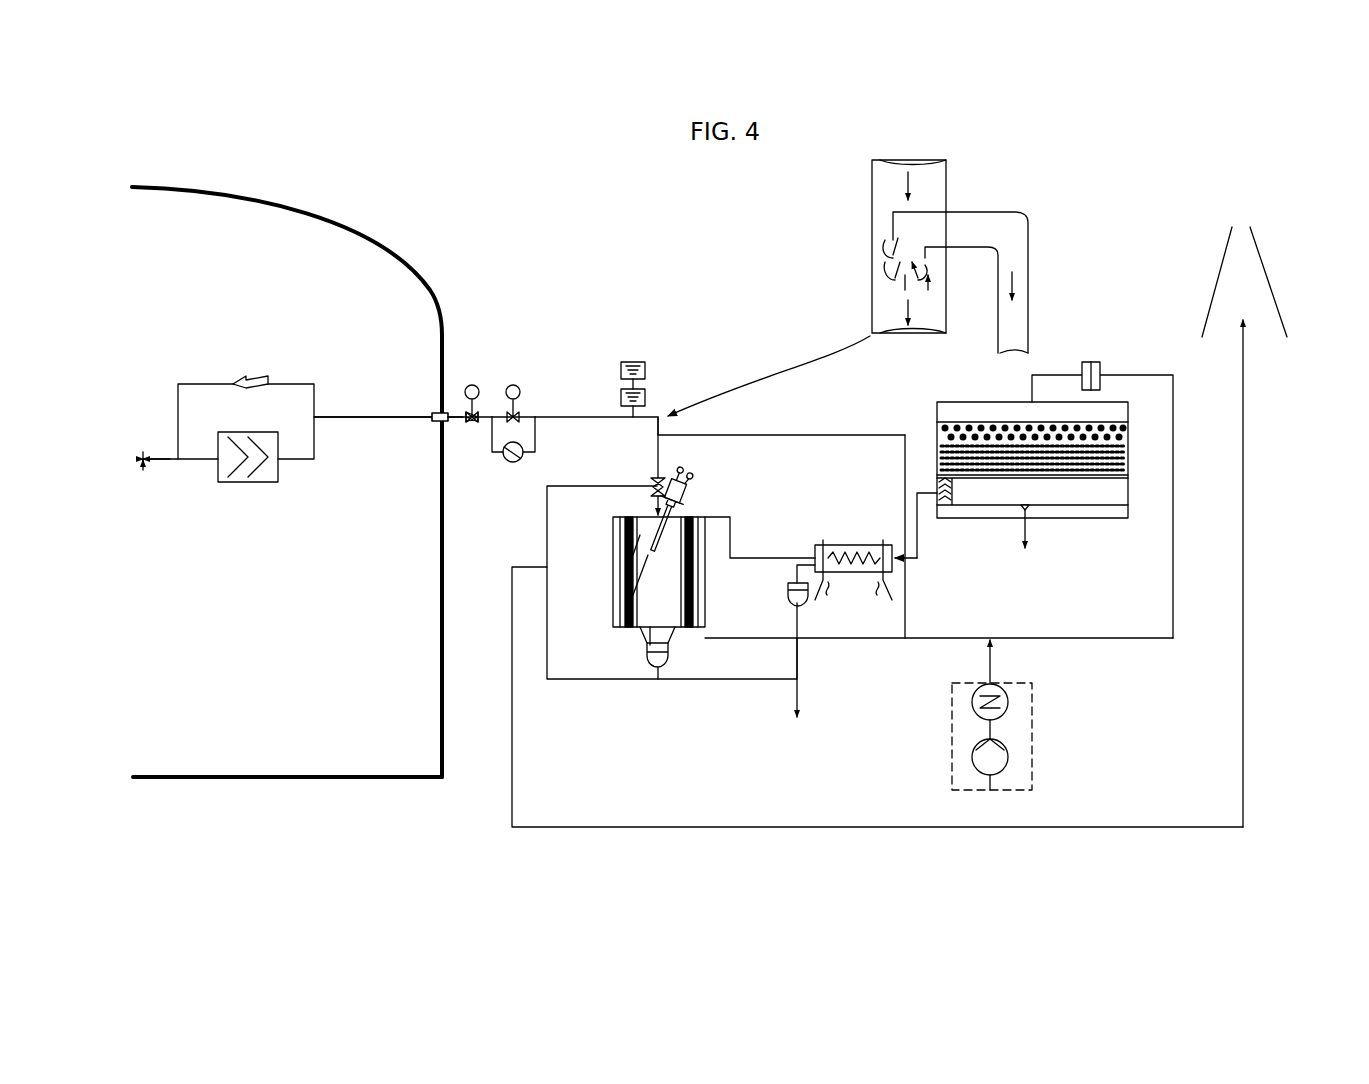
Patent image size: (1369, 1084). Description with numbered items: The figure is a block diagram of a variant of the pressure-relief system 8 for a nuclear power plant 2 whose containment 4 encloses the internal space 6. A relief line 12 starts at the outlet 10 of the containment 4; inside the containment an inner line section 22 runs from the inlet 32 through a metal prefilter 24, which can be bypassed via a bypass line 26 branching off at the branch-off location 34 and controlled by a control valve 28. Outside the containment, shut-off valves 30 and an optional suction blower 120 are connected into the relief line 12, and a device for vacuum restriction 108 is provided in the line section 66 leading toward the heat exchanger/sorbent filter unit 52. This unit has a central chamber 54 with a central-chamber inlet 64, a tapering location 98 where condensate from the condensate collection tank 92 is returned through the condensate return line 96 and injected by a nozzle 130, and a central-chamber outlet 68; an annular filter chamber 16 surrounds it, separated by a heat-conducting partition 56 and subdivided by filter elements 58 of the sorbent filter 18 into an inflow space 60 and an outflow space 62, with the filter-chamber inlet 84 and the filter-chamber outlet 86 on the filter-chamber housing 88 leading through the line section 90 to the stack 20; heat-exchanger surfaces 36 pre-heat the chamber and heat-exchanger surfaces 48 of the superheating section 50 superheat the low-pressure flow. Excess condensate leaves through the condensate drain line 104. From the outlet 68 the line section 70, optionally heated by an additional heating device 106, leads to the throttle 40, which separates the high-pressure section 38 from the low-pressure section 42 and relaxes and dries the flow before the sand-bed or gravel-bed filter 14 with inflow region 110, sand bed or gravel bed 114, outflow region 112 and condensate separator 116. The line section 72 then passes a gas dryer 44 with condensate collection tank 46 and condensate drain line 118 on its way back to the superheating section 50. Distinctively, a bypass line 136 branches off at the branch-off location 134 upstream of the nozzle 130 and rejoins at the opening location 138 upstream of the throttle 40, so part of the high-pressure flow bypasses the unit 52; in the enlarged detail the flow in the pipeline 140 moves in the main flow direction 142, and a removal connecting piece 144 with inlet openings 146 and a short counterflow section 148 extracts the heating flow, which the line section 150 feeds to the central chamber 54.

The nuclear power plant 2 is at (291, 866).
The containment 4 is at (318, 212).
The internal space 6 is at (255, 672).
The pressure-relief system 8 is at (868, 416).
The outlet 10 is at (437, 421).
The relief line 12 is at (568, 417).
The sand-bed or gravel-bed filter 14 is at (934, 400).
The filter chamber 16 is at (708, 540).
The sorbent filter 18 is at (700, 604).
The stack 20 is at (1215, 280).
The inner line section 22 is at (377, 416).
The prefilter 24 is at (250, 482).
The bypass line 26 is at (292, 384).
The control valve 28 is at (258, 382).
The shut-off valve 30 is at (520, 406).
The inlet 32 is at (146, 480).
The branch-off location 34 is at (180, 462).
The heat-exchanger surfaces 36 is at (652, 630).
The high-pressure section 38 is at (600, 417).
The throttle 40 is at (1092, 361).
The low-pressure section 42 is at (1034, 396).
The gas dryer 44 is at (855, 545).
The condensate collection tank 46 is at (806, 602).
The heat-exchanger surfaces 48 is at (690, 612).
The superheating section 50 is at (692, 614).
The heat exchanger/sorbent filter unit 52 is at (604, 626).
The central chamber 54 is at (652, 595).
The partition 56 is at (628, 626).
The filter elements 58 is at (626, 582).
The inflow space 60 is at (640, 532).
The outflow space 62 is at (618, 603).
The central-chamber inlet 64 is at (648, 487).
The line section 66 is at (662, 416).
The central-chamber outlet 68 is at (678, 642).
The line section 70 is at (880, 640).
The line section 72 is at (920, 554).
The filter-chamber inlet 84 is at (640, 548).
The filter-chamber outlet 86 is at (610, 565).
The filter-chamber housing 88 is at (706, 626).
The line section 90 is at (1003, 828).
The condensate collection tank 92 is at (660, 668).
The condensate return line 96 is at (546, 545).
The tapering location 98 is at (652, 482).
The condensate drain line 104 is at (765, 680).
The additional heating device 106 is at (1034, 740).
The vacuum restriction device 108 is at (633, 361).
The inflow region 110 is at (985, 420).
The outflow region 112 is at (1078, 492).
The sand bed or gravel bed 114 is at (1128, 470).
The condensate separator 116 is at (1024, 528).
The condensate drain line 118 is at (799, 660).
The suction blower 120 is at (513, 462).
The nozzle 130 is at (654, 512).
The branch-off location 134 is at (660, 422).
The bypass line 136 is at (797, 434).
The opening location 138 is at (908, 640).
The pipeline 140 is at (946, 198).
The main flow direction 142 is at (912, 178).
The removal connecting piece 144 is at (893, 235).
The inlet openings 146 is at (890, 278).
The counterflow section 148 is at (912, 248).
The line section 150 is at (660, 440).